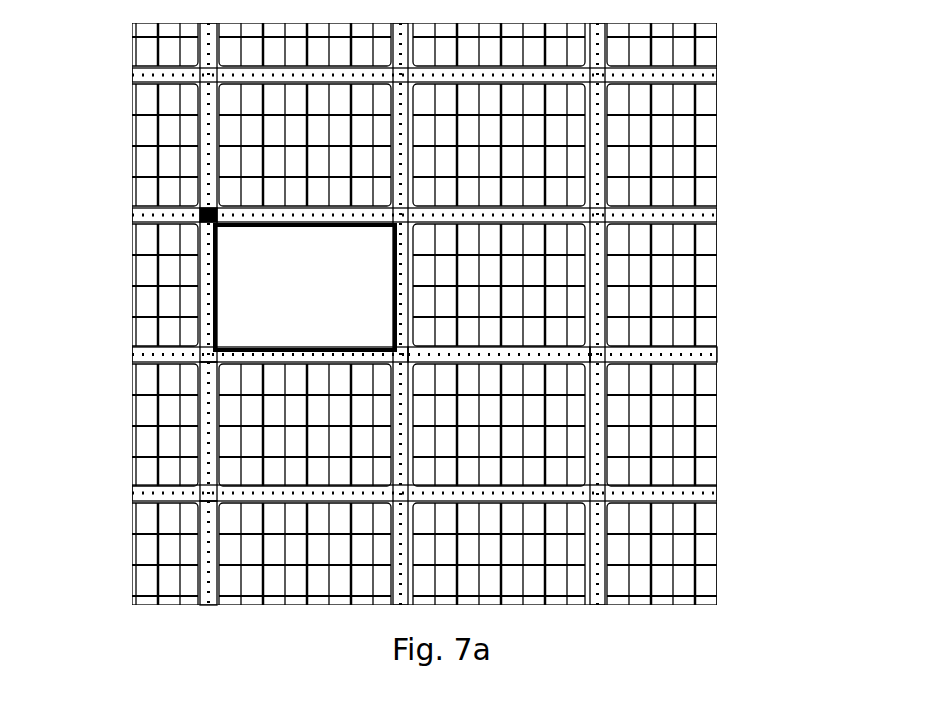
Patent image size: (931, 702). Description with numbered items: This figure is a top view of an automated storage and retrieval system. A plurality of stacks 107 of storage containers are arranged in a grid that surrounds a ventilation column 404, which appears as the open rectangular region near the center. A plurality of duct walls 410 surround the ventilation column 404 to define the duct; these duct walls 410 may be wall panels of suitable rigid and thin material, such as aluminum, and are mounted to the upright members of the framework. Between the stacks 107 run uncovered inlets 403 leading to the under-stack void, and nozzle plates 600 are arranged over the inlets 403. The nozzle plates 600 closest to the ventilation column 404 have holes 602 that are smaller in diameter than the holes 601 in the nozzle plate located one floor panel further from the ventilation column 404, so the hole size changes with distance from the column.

The stacks 107 is at (549, 445).
The inlets 403 is at (199, 563).
The ventilation column 404 is at (305, 287).
The duct walls 410 is at (204, 233).
The nozzle plates 600 is at (198, 427).
The holes 601 is at (692, 353).
The holes 602 is at (543, 347).